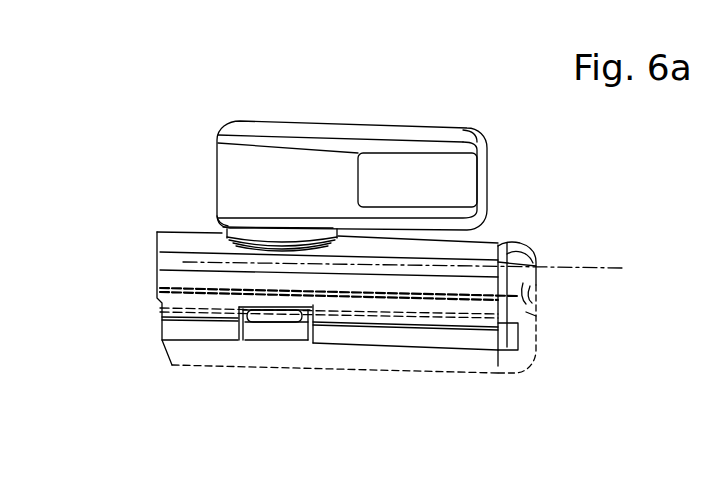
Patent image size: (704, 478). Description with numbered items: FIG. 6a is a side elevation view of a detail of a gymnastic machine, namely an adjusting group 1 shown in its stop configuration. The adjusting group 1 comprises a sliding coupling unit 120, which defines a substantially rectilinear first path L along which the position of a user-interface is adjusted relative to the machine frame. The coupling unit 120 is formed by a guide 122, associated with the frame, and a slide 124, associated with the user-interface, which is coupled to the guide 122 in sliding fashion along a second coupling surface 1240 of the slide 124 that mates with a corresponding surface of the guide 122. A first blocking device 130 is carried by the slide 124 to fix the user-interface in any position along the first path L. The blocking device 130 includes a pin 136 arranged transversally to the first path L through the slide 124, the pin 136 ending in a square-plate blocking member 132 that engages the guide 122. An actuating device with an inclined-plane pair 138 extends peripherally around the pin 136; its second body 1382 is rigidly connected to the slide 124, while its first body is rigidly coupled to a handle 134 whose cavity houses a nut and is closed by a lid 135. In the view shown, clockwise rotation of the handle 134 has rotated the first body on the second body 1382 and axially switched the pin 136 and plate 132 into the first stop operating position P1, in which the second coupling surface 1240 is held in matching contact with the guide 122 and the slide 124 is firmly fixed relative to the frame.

The adjusting group 1 is at (95, 95).
The sliding coupling unit 120 is at (521, 181).
The guide 122 is at (460, 368).
The slide 124 is at (467, 248).
The second coupling surface 1240 is at (533, 320).
The first blocking device 130 is at (514, 148).
The blocking member 132 is at (292, 328).
The handle 134 is at (215, 173).
The lid 135 is at (385, 130).
The pin 136 is at (253, 323).
The actuating device with inclined-plane pair 138 is at (141, 184).
The second body 1382 is at (223, 250).
The first path L is at (597, 270).
The first stop operating position P1 is at (282, 404).